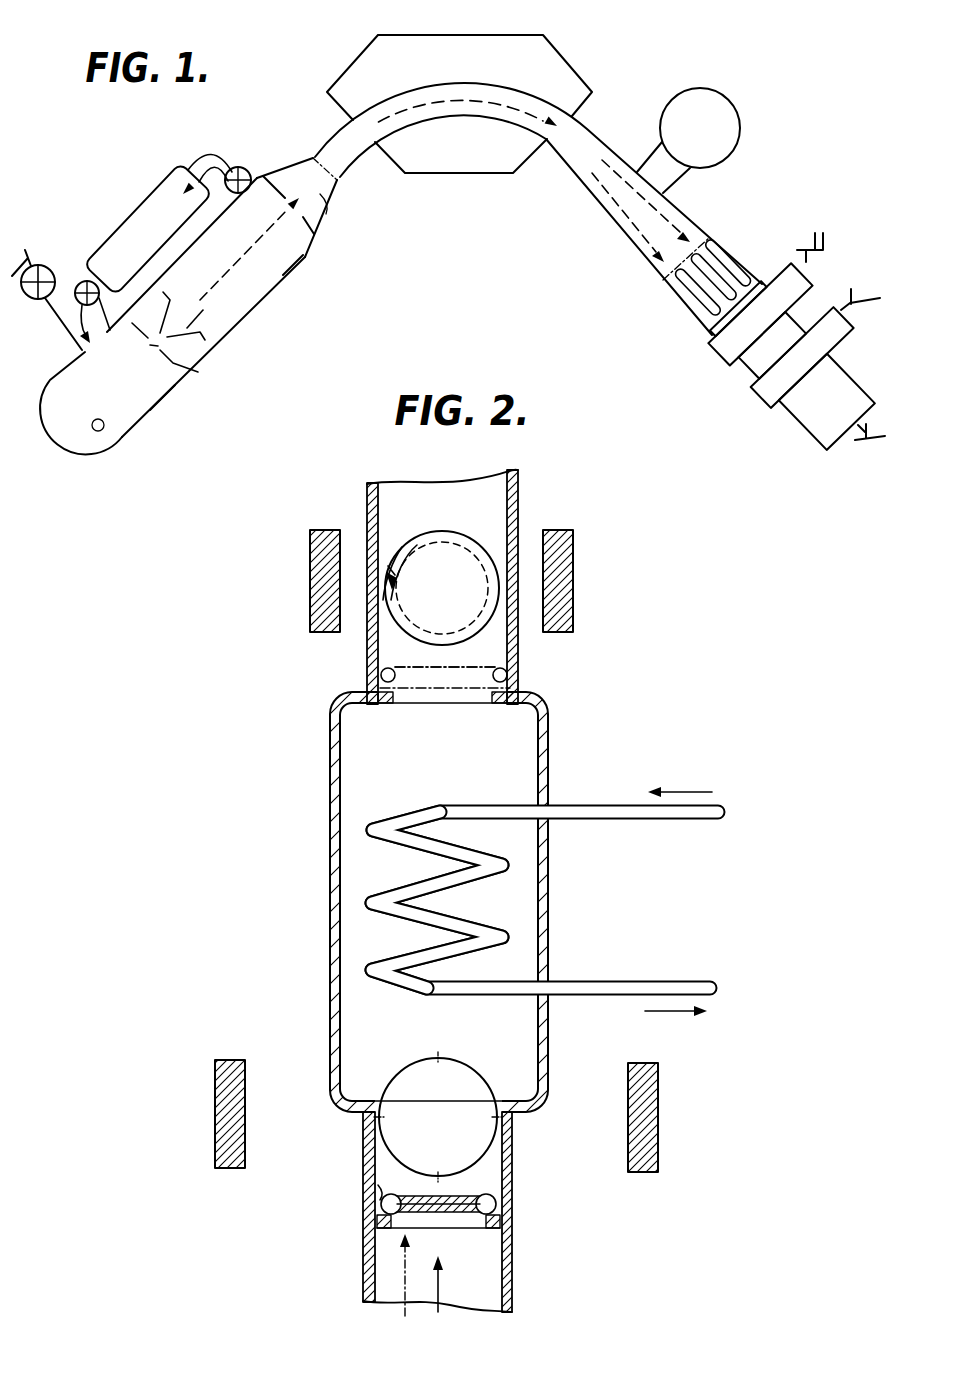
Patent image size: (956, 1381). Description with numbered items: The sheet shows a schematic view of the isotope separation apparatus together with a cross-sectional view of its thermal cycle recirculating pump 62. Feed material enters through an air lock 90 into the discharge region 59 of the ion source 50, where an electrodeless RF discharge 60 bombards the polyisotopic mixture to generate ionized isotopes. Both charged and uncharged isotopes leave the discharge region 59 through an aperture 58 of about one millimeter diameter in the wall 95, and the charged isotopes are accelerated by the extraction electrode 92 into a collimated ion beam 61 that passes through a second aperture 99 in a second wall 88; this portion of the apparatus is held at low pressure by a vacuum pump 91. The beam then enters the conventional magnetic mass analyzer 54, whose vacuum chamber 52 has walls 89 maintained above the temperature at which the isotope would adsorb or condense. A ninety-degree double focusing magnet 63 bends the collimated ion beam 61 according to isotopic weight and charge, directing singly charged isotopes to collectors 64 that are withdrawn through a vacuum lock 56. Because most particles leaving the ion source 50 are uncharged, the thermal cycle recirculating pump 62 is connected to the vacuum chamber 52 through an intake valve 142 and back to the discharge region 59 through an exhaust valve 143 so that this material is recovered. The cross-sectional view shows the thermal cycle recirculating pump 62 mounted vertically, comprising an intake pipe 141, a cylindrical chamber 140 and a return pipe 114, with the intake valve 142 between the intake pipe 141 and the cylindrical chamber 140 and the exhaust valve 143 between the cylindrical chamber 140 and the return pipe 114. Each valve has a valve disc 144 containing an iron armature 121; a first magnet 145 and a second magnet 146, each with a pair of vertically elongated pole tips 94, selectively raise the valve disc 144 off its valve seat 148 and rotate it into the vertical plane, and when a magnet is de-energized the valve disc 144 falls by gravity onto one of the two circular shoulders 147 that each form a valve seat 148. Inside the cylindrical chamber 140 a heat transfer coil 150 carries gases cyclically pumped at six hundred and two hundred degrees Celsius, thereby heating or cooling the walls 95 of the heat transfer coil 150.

In FIG. 1, the ion source 50 is at (49, 380).
In FIG. 1, the vacuum chamber 52 is at (268, 253).
In FIG. 1, the magnetic mass analyzer 54 is at (583, 86).
In FIG. 1, the vacuum lock 56 is at (810, 410).
In FIG. 1, the aperture 58 is at (153, 352).
In FIG. 1, the discharge region 59 is at (164, 398).
In FIG. 1, the electrodeless RF discharge 60 is at (103, 430).
In FIG. 1, the collimated ion beam 61 is at (226, 254).
In FIG. 1, the thermal cycle recirculating pump 62 is at (133, 244).
In FIG. 2, the thermal cycle recirculating pump 62 is at (300, 866).
In FIG. 1, the double focusing magnet 63 is at (452, 48).
In FIG. 1, the collectors 64 is at (733, 288).
In FIG. 1, the second wall 88 is at (328, 205).
In FIG. 1, the walls 89 is at (291, 277).
In FIG. 1, the air lock 90 is at (40, 264).
In FIG. 1, the vacuum pump 91 is at (728, 111).
In FIG. 1, the extraction electrode 92 is at (188, 329).
In FIG. 1, the wall 95 is at (177, 364).
In FIG. 2, the wall 95 is at (398, 807).
In FIG. 1, the second aperture 99 is at (311, 200).
In FIG. 1, the intake valve 142 is at (240, 167).
In FIG. 2, the intake valve 142 is at (431, 1287).
In FIG. 1, the exhaust valve 143 is at (85, 281).
In FIG. 2, the exhaust valve 143 is at (418, 716).
In FIG. 2, the pole tips 94 is at (341, 533).
In FIG. 2, the return pipe 114 is at (367, 494).
In FIG. 2, the iron armature 121 is at (417, 547).
In FIG. 2, the cylindrical chamber 140 is at (427, 775).
In FIG. 2, the intake pipe 141 is at (512, 1290).
In FIG. 2, the valve disc 144 is at (509, 645).
In FIG. 2, the first magnet 145 is at (205, 1118).
In FIG. 2, the second magnet 146 is at (298, 598).
In FIG. 2, the circular shoulders 147 is at (488, 704).
In FIG. 2, the valve seat 148 is at (487, 683).
In FIG. 2, the heat transfer coil 150 is at (592, 806).